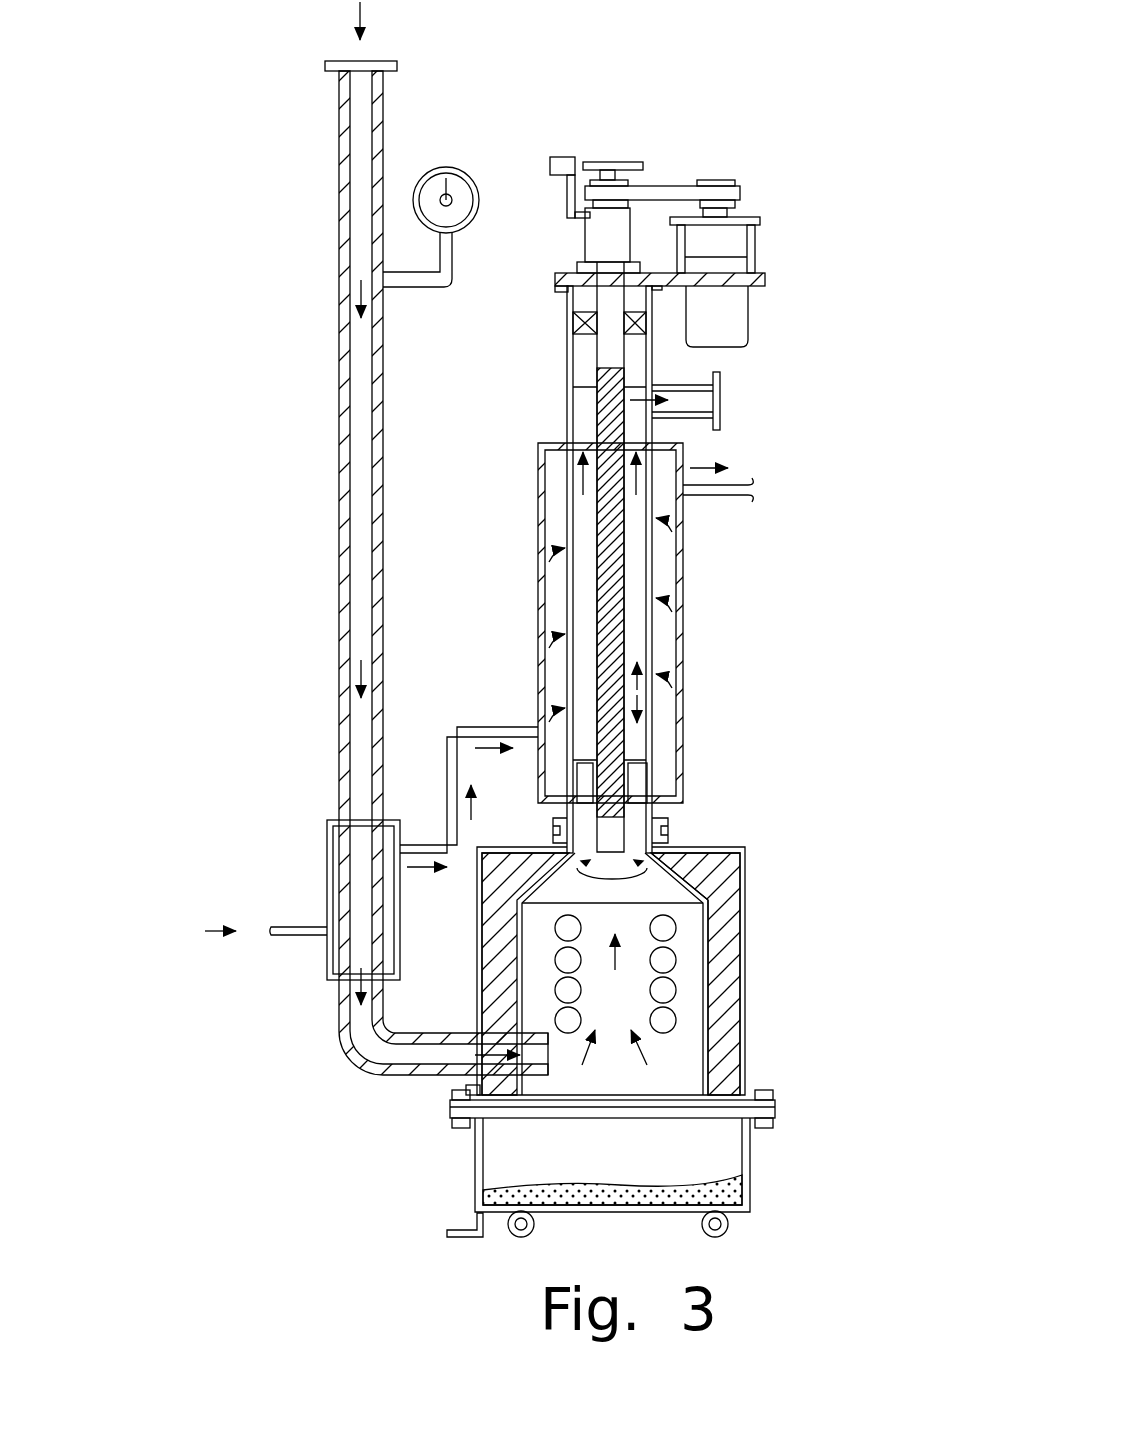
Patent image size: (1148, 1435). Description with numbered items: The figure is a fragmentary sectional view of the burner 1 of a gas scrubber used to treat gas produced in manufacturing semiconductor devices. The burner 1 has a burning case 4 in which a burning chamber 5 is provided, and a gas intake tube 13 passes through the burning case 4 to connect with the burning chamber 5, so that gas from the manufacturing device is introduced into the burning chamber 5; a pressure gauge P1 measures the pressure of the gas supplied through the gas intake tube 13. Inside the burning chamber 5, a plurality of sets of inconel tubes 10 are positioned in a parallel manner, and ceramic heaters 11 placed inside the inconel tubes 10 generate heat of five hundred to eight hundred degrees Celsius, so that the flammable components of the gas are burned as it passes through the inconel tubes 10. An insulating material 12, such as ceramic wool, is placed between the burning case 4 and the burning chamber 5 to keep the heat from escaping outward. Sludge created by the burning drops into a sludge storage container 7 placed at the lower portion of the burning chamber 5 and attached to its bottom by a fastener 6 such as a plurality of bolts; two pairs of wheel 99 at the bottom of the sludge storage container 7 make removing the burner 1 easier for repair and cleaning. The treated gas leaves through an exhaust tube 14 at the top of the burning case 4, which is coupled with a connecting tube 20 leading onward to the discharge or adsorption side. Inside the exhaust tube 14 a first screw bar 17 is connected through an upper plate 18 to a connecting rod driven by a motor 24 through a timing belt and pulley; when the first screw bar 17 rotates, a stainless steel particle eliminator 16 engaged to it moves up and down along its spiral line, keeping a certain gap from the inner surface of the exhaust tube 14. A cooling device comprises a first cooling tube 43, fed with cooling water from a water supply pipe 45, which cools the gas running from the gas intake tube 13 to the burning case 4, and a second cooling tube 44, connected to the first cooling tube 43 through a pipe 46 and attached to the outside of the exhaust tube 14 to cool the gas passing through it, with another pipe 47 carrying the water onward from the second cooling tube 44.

The burner 1 is at (750, 118).
The burning case 4 is at (480, 905).
The burning chamber 5 is at (690, 1012).
The fastener 6 is at (762, 1090).
The sludge storage container 7 is at (750, 1152).
The inconel tubes 10 is at (680, 928).
The ceramic heaters 11 is at (680, 958).
The insulating material 12 is at (722, 882).
The gas intake tube 13 is at (340, 575).
The exhaust tube 14 is at (567, 388).
The particle eliminator 16 is at (668, 830).
The first screw bar 17 is at (627, 628).
The upper plate 18 is at (766, 280).
The connecting tube 20 is at (720, 400).
The motor 24 is at (730, 322).
The first cooling tube 43 is at (327, 885).
The second cooling tube 44 is at (538, 512).
The water supply pipe 45 is at (308, 940).
The pipe 46 is at (495, 730).
The pipe 47 is at (712, 497).
The wheel 99 is at (725, 1232).
The pressure gauge P1 is at (449, 167).